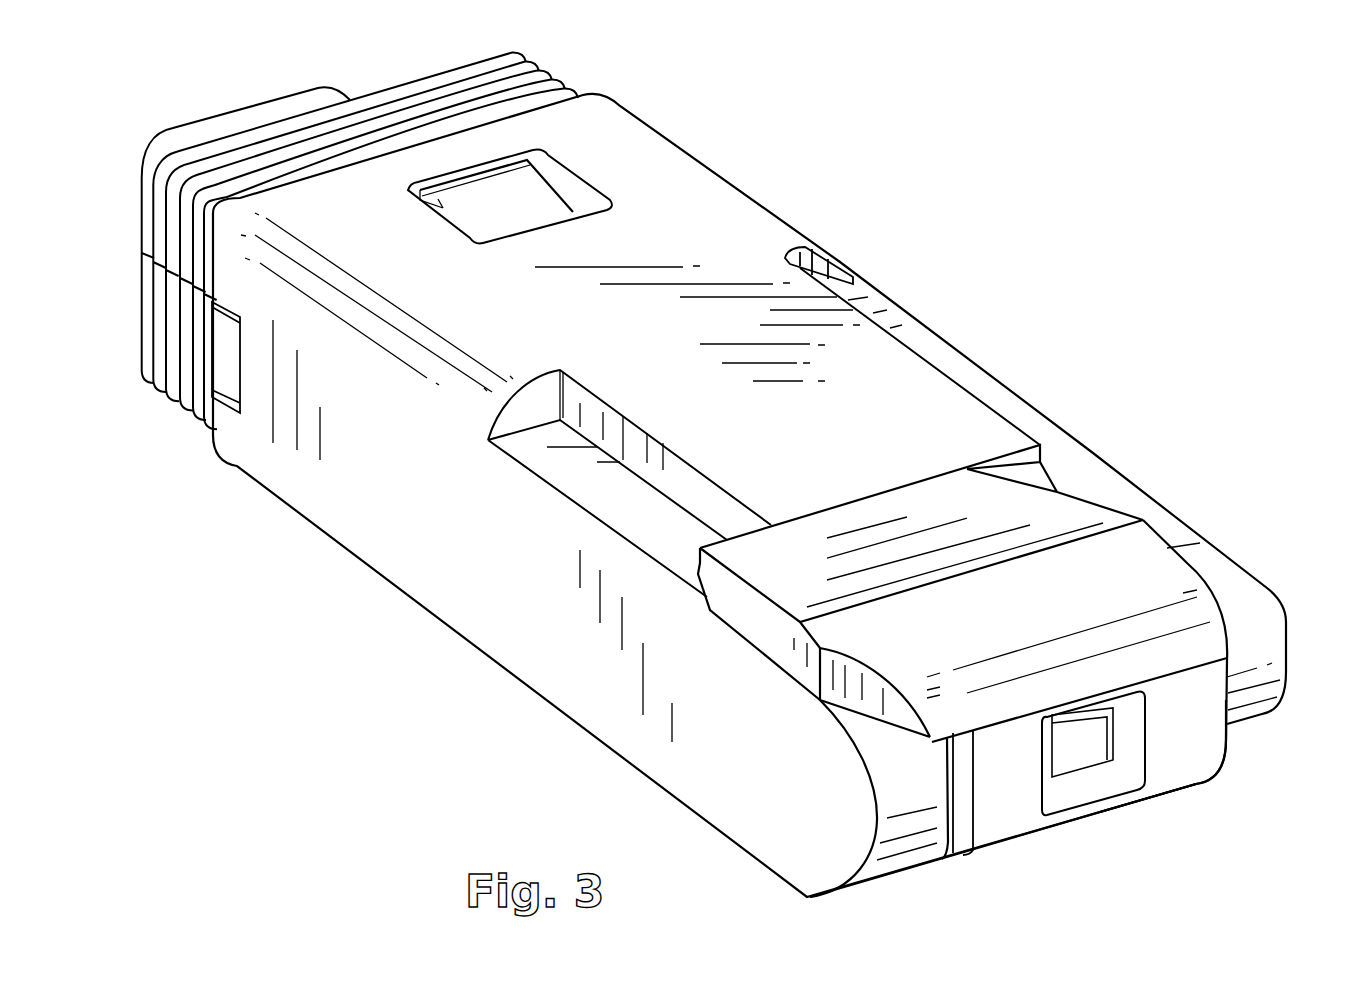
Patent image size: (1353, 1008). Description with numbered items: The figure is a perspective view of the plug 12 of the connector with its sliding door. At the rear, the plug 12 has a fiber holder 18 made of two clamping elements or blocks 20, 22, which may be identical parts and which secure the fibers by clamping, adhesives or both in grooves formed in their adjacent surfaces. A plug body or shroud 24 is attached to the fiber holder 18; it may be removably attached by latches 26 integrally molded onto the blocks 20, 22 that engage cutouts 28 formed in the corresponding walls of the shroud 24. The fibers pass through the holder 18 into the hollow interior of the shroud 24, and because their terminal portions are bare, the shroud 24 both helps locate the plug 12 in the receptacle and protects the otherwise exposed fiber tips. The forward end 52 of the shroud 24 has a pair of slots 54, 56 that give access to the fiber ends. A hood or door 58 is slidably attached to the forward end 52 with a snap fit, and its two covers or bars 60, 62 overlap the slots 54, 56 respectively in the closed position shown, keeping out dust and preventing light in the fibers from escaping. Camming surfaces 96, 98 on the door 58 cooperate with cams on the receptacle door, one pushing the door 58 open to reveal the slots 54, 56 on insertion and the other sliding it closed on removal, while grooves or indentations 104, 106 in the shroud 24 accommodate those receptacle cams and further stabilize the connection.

The plug 12 is at (942, 256).
The fiber holder 18 is at (580, 70).
The clamping element 20 is at (140, 213).
The clamping element 22 is at (137, 307).
The shroud 24 is at (487, 566).
The latch 26 is at (500, 177).
The cutout 28 is at (578, 195).
The forward end 52 is at (907, 877).
The slot 54 is at (947, 740).
The slot 56 is at (1108, 735).
The door 58 is at (1193, 590).
The bar 60 is at (1007, 798).
The bar 62 is at (1180, 733).
The camming surface 96 is at (1082, 500).
The camming surface 98 is at (873, 705).
The groove 104 is at (963, 373).
The groove 106 is at (700, 503).